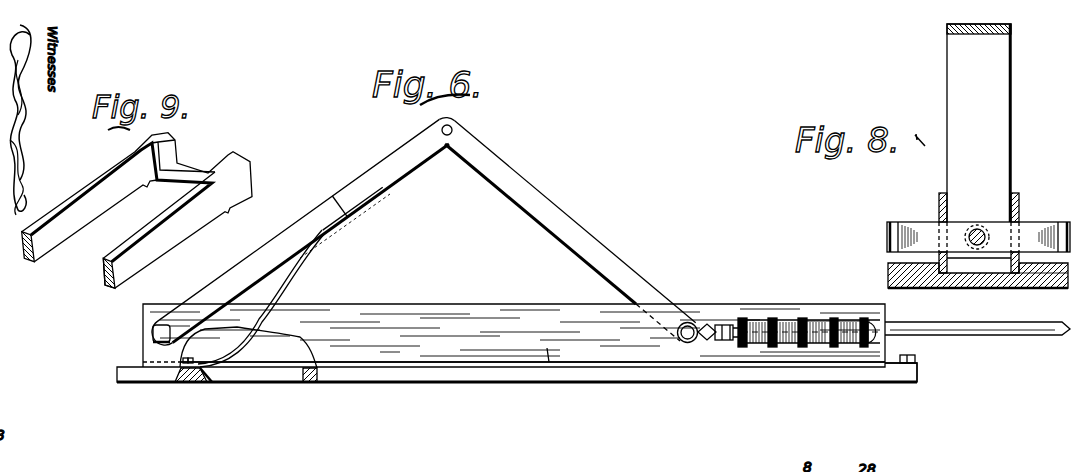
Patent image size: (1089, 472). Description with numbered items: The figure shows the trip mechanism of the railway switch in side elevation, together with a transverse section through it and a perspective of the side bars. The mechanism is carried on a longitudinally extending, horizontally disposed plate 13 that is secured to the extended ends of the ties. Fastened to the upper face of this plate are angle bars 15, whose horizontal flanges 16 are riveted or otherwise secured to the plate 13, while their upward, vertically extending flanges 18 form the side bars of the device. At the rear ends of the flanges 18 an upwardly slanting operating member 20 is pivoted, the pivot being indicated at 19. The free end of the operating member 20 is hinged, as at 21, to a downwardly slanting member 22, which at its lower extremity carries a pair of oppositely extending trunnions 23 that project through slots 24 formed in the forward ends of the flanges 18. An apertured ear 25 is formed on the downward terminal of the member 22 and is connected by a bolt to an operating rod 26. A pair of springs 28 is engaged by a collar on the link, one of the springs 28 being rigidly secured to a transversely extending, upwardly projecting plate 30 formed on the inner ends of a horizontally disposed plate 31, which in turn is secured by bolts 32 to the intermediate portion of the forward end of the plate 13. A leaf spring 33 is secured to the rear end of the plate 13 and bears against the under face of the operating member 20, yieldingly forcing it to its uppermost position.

In FIG. 6, the plate 13 is at (412, 374).
In FIG. 8, the plate 13 is at (888, 280).
In FIG. 6, the angle bars 15 is at (547, 348).
In FIG. 8, the angle bars 15 is at (1020, 196).
In FIG. 6, the horizontal flanges 16 is at (495, 363).
In FIG. 8, the horizontal flanges 16 is at (1038, 268).
In FIG. 6, the vertically extending flanges 18 is at (437, 304).
In FIG. 6, the pivot 19 is at (153, 333).
In FIG. 6, the operating member 20 is at (388, 168).
In FIG. 6, the hinge 21 is at (456, 128).
In FIG. 8, the hinge 21 is at (1012, 30).
In FIG. 6, the downwardly slanting member 22 is at (532, 198).
In FIG. 8, the downwardly slanting member 22 is at (1003, 114).
In FIG. 6, the trunnions 23 is at (689, 325).
In FIG. 6, the slots 24 is at (738, 345).
In FIG. 6, the apertured ear 25 is at (711, 321).
In FIG. 6, the operating rod 26 is at (996, 336).
In FIG. 8, the operating rod 26 is at (977, 245).
In FIG. 6, the springs 28 is at (828, 328).
In FIG. 8, the springs 28 is at (922, 233).
In FIG. 6, the upwardly projecting plate 30 is at (884, 330).
In FIG. 6, the horizontally disposed plate 31 is at (917, 366).
In FIG. 6, the bolts 32 is at (916, 357).
In FIG. 6, the leaf spring 33 is at (286, 278).